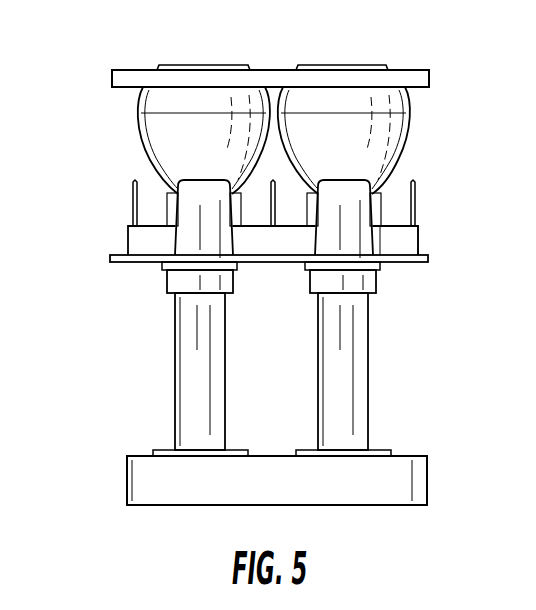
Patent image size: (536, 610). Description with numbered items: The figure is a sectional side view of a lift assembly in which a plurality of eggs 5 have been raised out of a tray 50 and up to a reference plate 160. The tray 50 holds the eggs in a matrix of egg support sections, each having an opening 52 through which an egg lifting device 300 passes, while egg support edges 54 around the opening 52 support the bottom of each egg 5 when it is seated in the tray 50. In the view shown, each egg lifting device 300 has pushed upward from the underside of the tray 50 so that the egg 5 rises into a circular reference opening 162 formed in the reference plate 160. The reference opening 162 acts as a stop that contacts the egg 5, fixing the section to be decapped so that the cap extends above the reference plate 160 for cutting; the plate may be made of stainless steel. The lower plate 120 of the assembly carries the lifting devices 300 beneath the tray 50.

The egg 5 is at (160, 125).
The tray 50 is at (133, 200).
The opening 52 is at (166, 224).
The egg support edges 54 is at (403, 241).
The plate 120 is at (115, 258).
The reference plate 160 is at (418, 78).
The reference opening 162 is at (190, 66).
The egg lifting device 300 is at (188, 387).